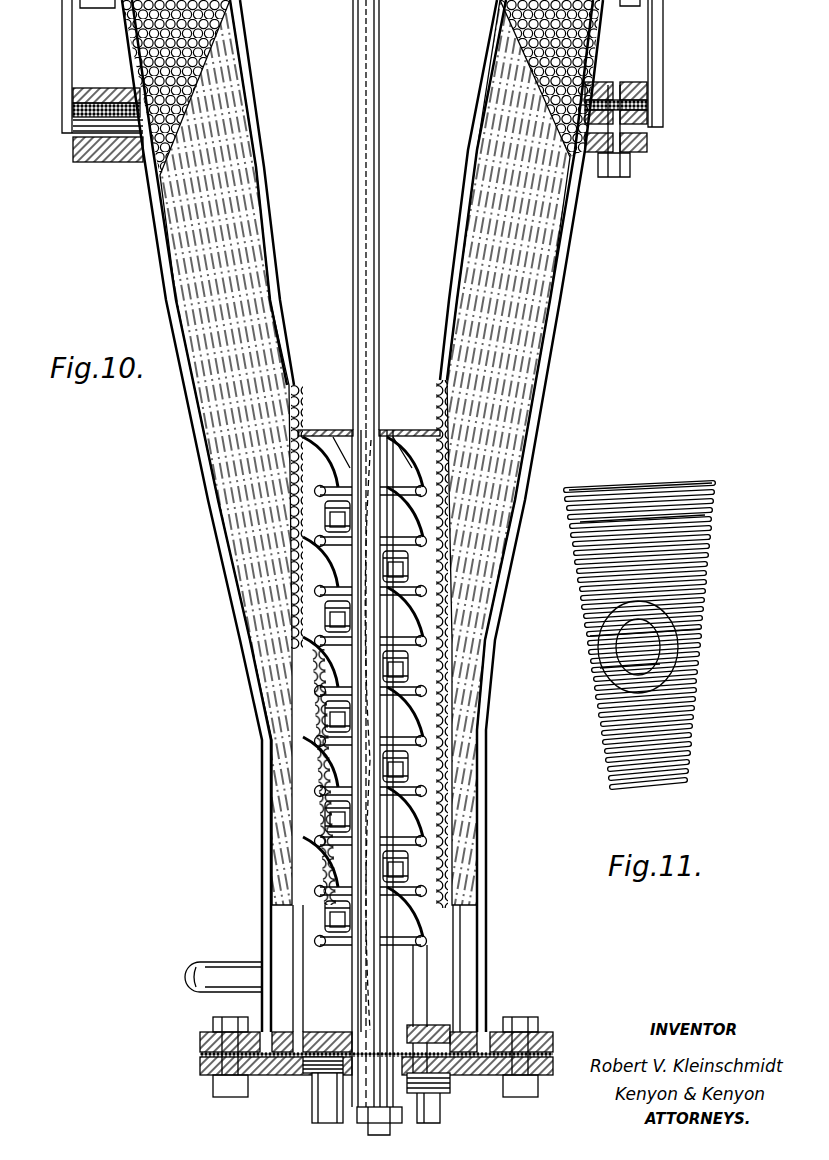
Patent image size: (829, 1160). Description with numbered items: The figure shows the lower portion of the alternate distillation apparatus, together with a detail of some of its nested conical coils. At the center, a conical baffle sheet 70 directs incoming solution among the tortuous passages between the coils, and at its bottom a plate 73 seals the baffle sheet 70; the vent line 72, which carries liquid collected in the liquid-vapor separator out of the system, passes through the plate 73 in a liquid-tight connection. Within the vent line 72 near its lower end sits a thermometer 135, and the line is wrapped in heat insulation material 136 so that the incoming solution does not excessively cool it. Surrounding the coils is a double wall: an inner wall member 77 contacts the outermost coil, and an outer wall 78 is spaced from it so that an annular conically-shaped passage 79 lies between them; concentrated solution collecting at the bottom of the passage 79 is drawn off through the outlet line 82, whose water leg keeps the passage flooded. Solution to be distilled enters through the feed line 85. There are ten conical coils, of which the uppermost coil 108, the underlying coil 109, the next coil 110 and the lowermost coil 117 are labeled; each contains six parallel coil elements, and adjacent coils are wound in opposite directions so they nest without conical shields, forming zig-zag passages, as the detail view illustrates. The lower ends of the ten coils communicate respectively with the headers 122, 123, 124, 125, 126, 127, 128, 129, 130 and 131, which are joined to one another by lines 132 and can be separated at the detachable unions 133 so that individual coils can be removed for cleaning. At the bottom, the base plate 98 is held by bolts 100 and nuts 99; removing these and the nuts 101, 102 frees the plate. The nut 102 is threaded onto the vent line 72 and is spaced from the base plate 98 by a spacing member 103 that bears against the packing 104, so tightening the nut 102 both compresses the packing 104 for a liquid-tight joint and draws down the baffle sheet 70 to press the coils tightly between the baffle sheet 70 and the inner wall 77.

In FIG. 10, the baffle sheet 70 is at (470, 182).
In FIG. 10, the vent line 72 is at (379, 139).
In FIG. 10, the plate 73 is at (410, 430).
In FIG. 10, the inner wall member 77 is at (556, 325).
In FIG. 10, the outer wall 78 is at (549, 393).
In FIG. 10, the annular conically-shaped passage 79 is at (548, 357).
In FIG. 10, the outlet line 82 is at (211, 964).
In FIG. 10, the feed line 85 is at (311, 1098).
In FIG. 10, the base plate 98 is at (553, 1060).
In FIG. 10, the nuts 99 is at (538, 1084).
In FIG. 10, the bolts 100 is at (546, 1030).
In FIG. 10, the nut 101 is at (441, 1084).
In FIG. 10, the nut 102 is at (356, 1112).
In FIG. 10, the spacing member 103 is at (401, 1100).
In FIG. 10, the packing 104 is at (356, 1050).
In FIG. 11, the conical coil 108 is at (703, 584).
In FIG. 11, the conical coil 109 is at (703, 527).
In FIG. 11, the conical coil 110 is at (681, 481).
In FIG. 10, the conical coil 117 is at (128, 30).
In FIG. 10, the header 122 is at (292, 489).
In FIG. 10, the header 123 is at (320, 542).
In FIG. 10, the header 124 is at (320, 594).
In FIG. 10, the header 125 is at (320, 641).
In FIG. 10, the header 126 is at (320, 691).
In FIG. 10, the header 127 is at (320, 741).
In FIG. 10, the header 128 is at (320, 791).
In FIG. 10, the header 129 is at (320, 841).
In FIG. 10, the header 130 is at (320, 891).
In FIG. 10, the header 131 is at (320, 943).
In FIG. 10, the lines 132 is at (325, 512).
In FIG. 10, the detachable unions 133 is at (408, 586).
In FIG. 10, the thermometer 135 is at (368, 1012).
In FIG. 10, the heat insulation material 136 is at (358, 975).